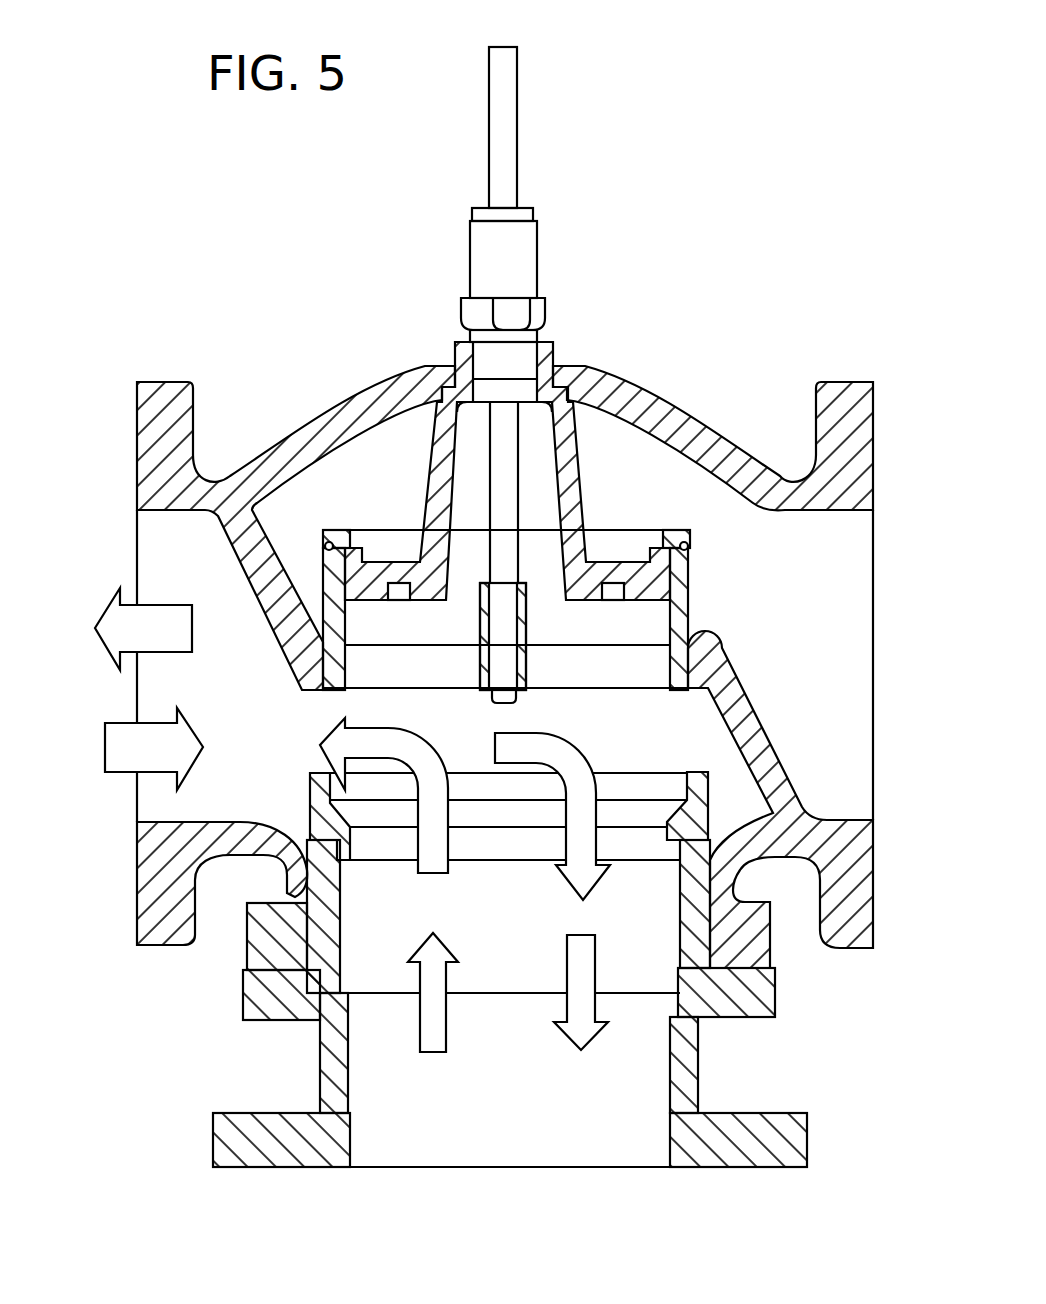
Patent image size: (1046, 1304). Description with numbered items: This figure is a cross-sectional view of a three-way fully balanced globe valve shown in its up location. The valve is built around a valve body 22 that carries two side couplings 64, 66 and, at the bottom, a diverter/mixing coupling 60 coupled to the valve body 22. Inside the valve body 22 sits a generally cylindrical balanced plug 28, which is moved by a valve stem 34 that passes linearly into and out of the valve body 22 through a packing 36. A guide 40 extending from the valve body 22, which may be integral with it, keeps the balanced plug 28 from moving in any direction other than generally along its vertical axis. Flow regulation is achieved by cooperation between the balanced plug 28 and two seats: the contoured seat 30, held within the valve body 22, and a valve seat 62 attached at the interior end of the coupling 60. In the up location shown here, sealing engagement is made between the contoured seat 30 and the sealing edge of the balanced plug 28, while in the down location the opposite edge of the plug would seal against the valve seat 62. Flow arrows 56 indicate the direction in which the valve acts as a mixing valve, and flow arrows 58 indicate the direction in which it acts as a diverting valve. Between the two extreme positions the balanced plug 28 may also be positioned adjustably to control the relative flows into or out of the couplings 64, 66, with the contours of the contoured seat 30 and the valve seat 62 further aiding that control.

The valve body 22 is at (682, 423).
The balanced plug 28 is at (395, 627).
The contoured seat 30 is at (577, 508).
The valve stem 34 is at (517, 53).
The packing 36 is at (538, 253).
The guide 40 is at (717, 643).
The flow arrows 56 is at (140, 753).
The flow arrows 58 is at (167, 648).
The diverter/mixing coupling 60 is at (765, 1167).
The valve seat 62 is at (250, 858).
The coupling 64 is at (135, 538).
The coupling 66 is at (875, 532).